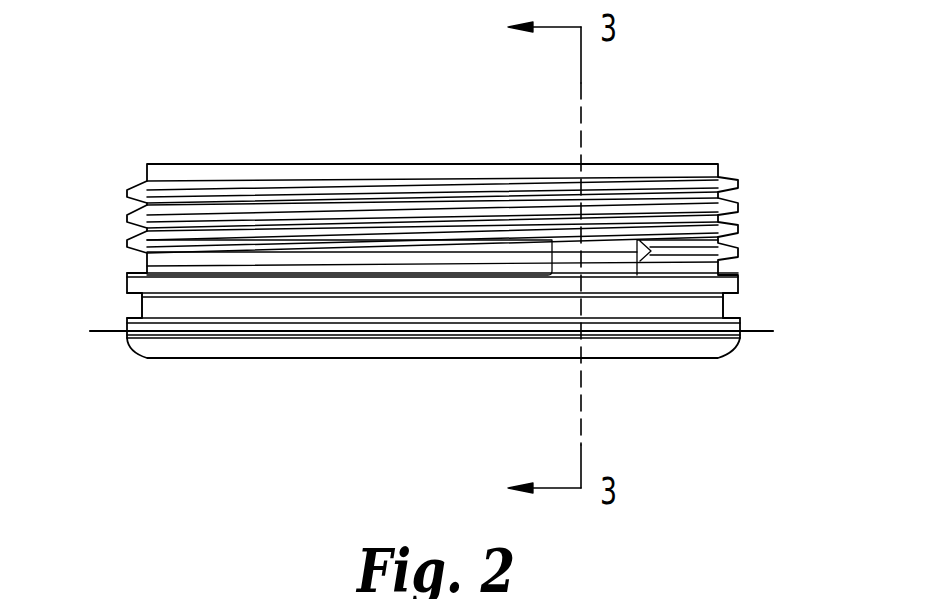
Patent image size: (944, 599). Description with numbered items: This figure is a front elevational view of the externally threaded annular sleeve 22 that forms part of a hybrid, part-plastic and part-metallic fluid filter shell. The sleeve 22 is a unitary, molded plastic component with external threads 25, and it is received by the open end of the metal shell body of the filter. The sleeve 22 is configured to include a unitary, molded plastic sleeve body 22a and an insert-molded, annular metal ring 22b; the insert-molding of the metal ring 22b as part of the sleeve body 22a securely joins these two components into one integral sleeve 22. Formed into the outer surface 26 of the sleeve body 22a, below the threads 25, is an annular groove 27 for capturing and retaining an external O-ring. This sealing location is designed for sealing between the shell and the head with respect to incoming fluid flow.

The annular sleeve 22 is at (447, 228).
The sleeve body 22a is at (713, 312).
The annular metal ring 22b is at (755, 338).
The external threads 25 is at (125, 198).
The outer surface 26 is at (143, 263).
The annular groove 27 is at (140, 306).